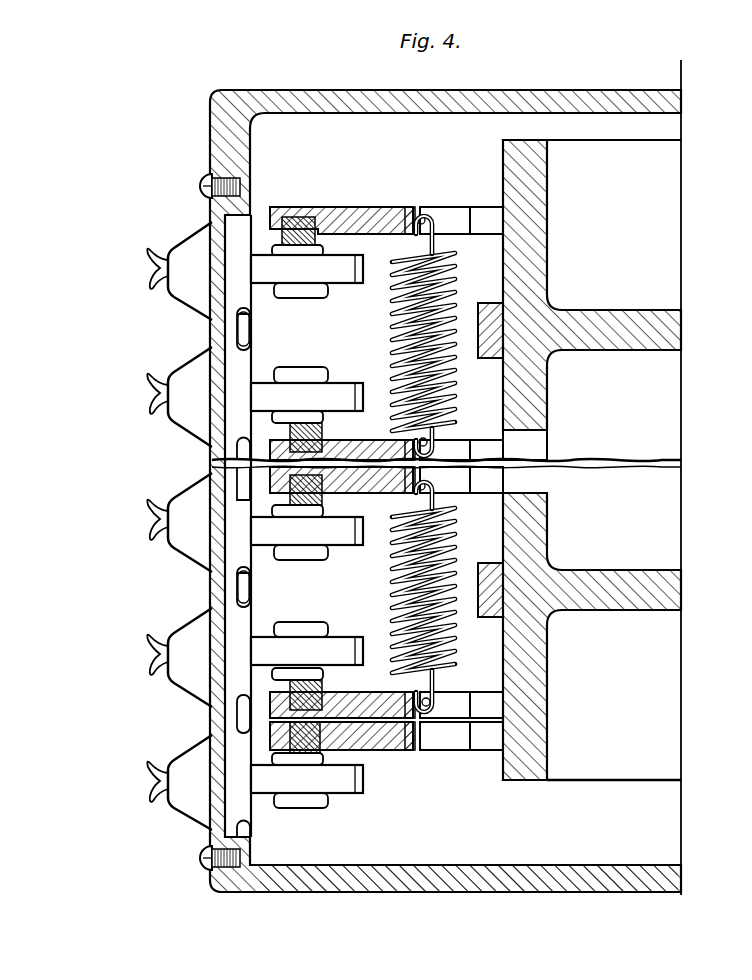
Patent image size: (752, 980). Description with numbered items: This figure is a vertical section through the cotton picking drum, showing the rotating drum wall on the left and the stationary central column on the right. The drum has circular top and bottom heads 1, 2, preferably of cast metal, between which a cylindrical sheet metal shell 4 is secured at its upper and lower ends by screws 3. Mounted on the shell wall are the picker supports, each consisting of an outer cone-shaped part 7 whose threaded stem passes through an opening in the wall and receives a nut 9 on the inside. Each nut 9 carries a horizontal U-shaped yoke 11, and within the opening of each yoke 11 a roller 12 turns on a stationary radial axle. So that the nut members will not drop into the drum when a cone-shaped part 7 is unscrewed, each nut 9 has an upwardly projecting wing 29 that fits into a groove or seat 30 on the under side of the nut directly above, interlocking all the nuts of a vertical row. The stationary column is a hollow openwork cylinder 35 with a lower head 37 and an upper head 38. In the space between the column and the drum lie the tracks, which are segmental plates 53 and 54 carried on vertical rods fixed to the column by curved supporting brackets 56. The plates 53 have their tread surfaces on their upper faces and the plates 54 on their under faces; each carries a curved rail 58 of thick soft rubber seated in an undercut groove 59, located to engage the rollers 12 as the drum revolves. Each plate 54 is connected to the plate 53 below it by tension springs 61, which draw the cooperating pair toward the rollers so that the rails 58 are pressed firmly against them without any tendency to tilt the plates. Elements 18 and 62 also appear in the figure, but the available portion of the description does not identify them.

The top head 1 is at (361, 91).
The bottom head 2 is at (470, 866).
The screws 3 is at (202, 186).
The cylindrical shell 4 is at (149, 577).
The outer cone-shaped part 7 is at (193, 362).
The nut 9 is at (241, 526).
The yoke 11 is at (307, 524).
The roller 12 is at (318, 300).
The spring clip 18 is at (158, 268).
The wing 29 is at (249, 337).
The groove or seat 30 is at (250, 318).
The hollow cylinder 35 is at (548, 690).
The lower head of the column 37 is at (632, 571).
The upper head of the column 38 is at (624, 310).
The segmental plate 53 is at (380, 440).
The segmental plate 54 is at (372, 207).
The supporting brackets 56 is at (490, 303).
The curved rails 58 is at (322, 238).
The undercut grooves 59 is at (300, 225).
The tension springs 61 is at (450, 285).
The spring anchor 62 is at (424, 214).